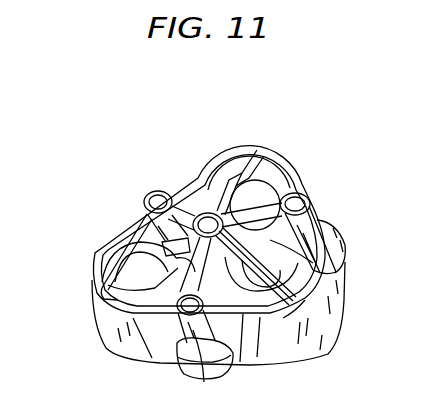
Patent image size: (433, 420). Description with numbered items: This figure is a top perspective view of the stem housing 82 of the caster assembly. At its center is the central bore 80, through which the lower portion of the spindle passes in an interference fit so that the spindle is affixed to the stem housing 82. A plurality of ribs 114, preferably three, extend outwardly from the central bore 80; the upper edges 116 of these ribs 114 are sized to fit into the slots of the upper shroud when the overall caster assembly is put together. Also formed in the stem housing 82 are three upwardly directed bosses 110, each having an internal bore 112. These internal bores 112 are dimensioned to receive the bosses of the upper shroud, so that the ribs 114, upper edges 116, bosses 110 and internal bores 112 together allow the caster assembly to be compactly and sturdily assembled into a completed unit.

The central bore 80 is at (190, 180).
The stem housing 82 is at (318, 340).
The upwardly directed bosses 110 is at (143, 214).
The internal bores 112 is at (152, 198).
The ribs 114 is at (243, 172).
The upper edges 116 is at (208, 223).